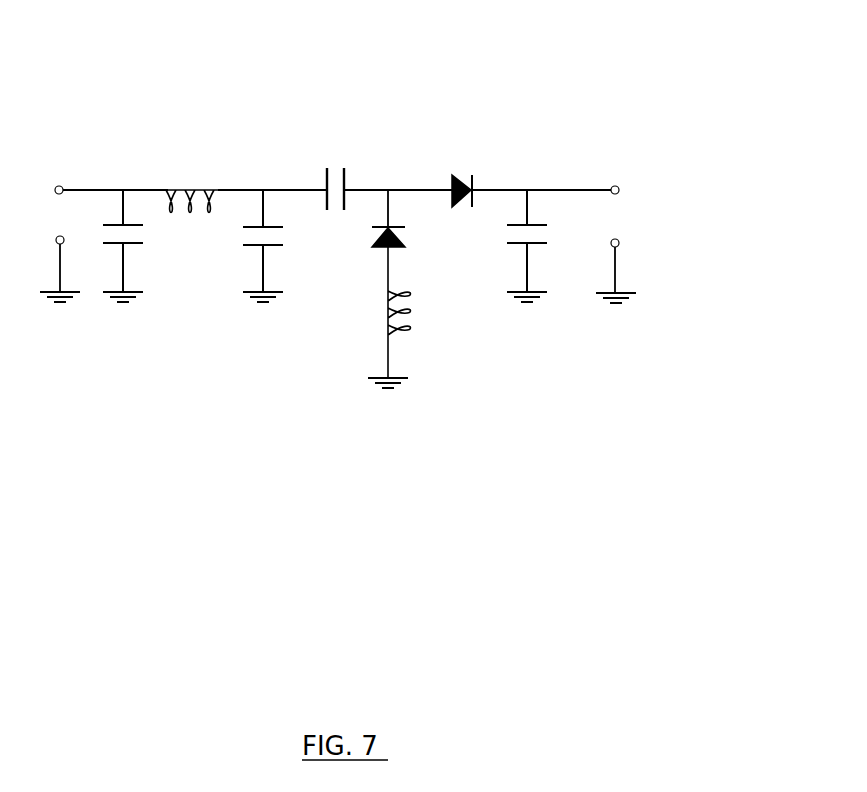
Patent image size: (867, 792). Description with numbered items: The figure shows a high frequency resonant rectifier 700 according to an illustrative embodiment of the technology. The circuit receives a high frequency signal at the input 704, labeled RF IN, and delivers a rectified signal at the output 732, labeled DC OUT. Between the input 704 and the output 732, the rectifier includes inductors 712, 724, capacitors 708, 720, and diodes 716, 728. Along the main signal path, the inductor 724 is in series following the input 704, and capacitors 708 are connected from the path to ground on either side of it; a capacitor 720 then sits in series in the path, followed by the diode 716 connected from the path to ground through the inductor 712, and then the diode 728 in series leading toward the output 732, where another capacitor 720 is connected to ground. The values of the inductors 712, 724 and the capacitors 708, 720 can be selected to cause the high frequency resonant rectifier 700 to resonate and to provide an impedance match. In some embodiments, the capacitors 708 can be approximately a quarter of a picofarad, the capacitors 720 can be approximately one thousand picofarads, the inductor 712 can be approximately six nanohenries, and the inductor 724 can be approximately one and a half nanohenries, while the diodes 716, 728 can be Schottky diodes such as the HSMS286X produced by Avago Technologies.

The high frequency resonant rectifier 700 is at (638, 98).
The input 704 is at (65, 186).
The capacitors 708 is at (142, 237).
The inductor 724 is at (192, 192).
The capacitors 720 is at (340, 166).
The diode 716 is at (403, 235).
The inductor 712 is at (412, 333).
The diode 728 is at (455, 175).
The output 732 is at (618, 183).